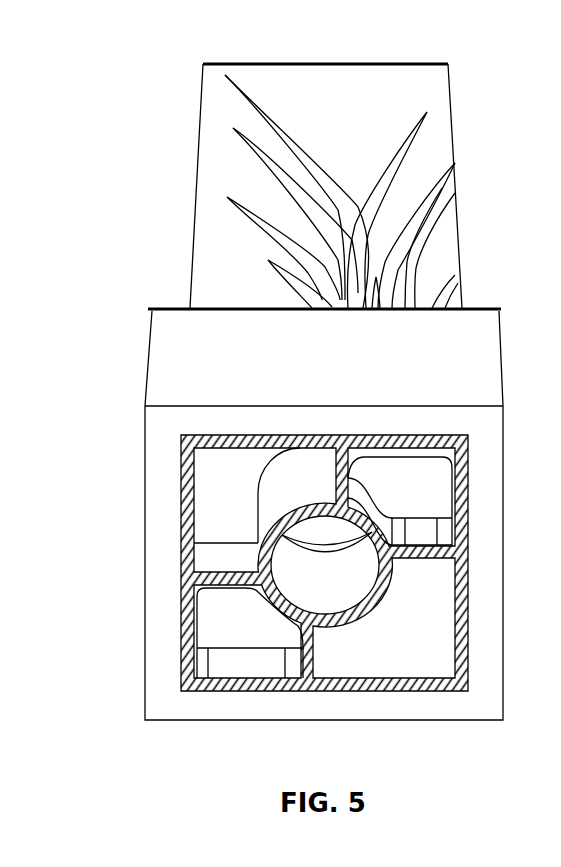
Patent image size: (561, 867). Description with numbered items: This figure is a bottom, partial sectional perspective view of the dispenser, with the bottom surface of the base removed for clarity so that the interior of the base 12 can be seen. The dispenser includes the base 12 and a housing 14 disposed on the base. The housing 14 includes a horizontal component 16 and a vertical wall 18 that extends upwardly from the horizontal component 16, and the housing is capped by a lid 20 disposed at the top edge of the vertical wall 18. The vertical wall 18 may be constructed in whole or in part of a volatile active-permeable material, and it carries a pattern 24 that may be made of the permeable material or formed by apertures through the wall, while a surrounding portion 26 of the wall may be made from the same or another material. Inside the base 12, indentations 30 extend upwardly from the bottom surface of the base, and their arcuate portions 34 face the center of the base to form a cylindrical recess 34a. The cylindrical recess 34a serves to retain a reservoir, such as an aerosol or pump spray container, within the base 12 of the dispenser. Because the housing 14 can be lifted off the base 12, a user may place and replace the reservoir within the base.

The base 12 is at (470, 565).
The housing 14 is at (490, 605).
The horizontal component 16 is at (483, 308).
The vertical wall 18 is at (455, 120).
The lid 20 is at (438, 63).
The pattern 24 is at (447, 170).
The portion 26 is at (443, 190).
The indentations 30 is at (448, 498).
The arcuate portions 34 is at (393, 562).
The cylindrical recess 34a is at (298, 555).